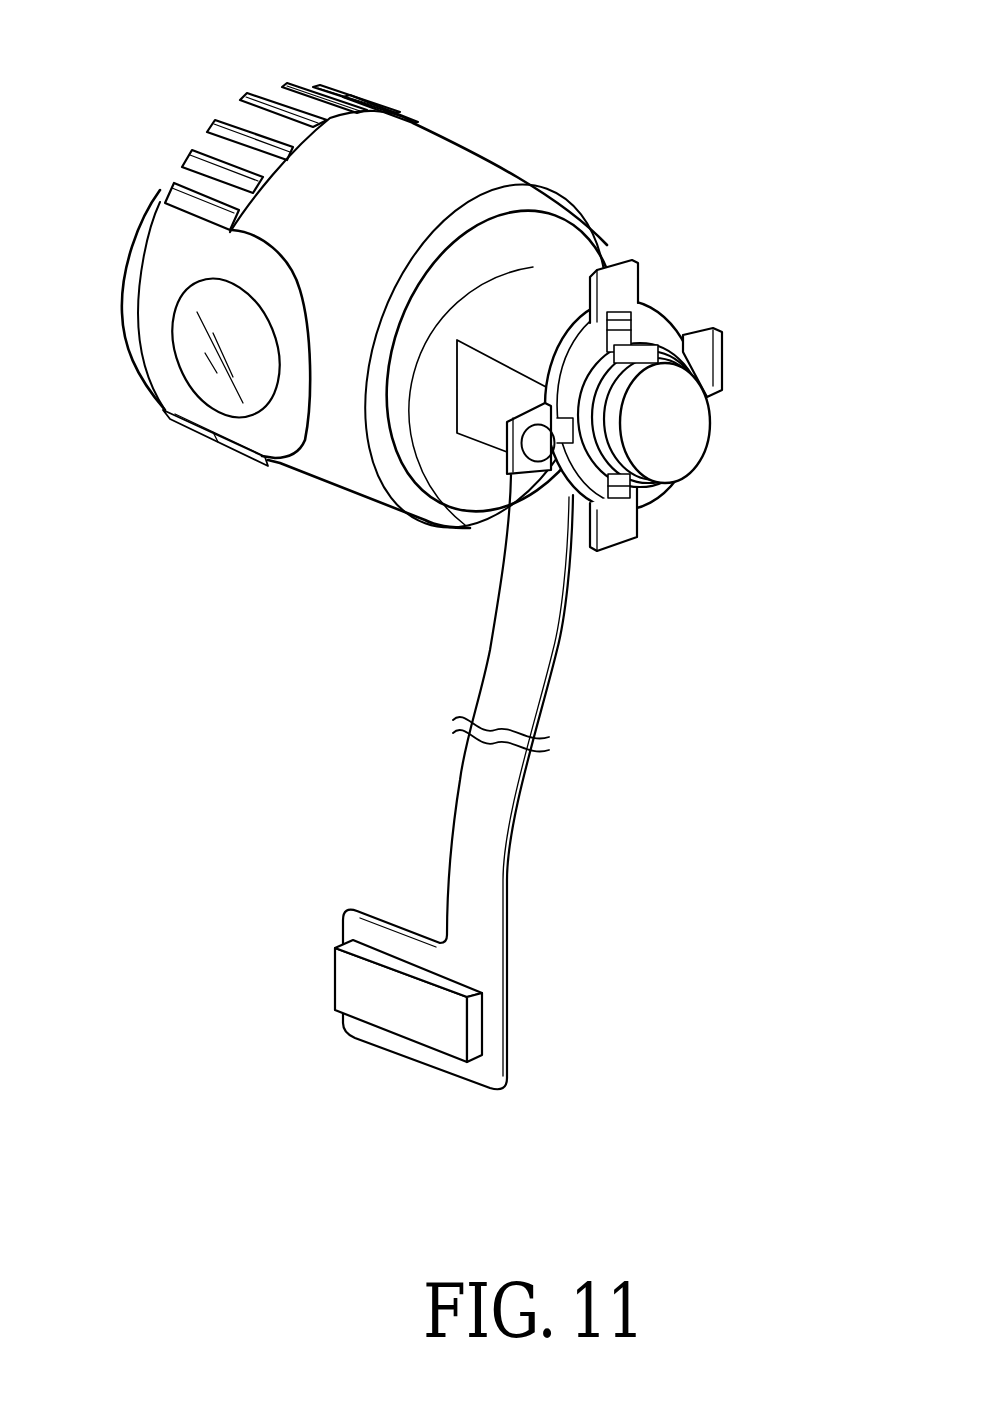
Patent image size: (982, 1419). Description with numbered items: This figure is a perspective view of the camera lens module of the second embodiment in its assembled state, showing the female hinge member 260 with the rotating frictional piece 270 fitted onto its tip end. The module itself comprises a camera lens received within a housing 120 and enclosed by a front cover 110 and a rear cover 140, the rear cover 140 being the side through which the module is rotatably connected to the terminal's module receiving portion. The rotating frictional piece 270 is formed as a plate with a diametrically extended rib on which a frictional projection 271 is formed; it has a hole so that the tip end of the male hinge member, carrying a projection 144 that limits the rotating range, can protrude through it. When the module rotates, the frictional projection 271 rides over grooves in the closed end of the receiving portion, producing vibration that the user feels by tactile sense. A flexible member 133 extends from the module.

The front cover 110 is at (248, 138).
The housing 120 is at (412, 170).
The flexible printed circuit 133 is at (482, 850).
The rear cover 140 is at (667, 430).
The projection 144 is at (657, 344).
The female hinge member 260 is at (550, 314).
The rotating frictional piece 270 is at (712, 380).
The frictional projection 271 is at (534, 452).